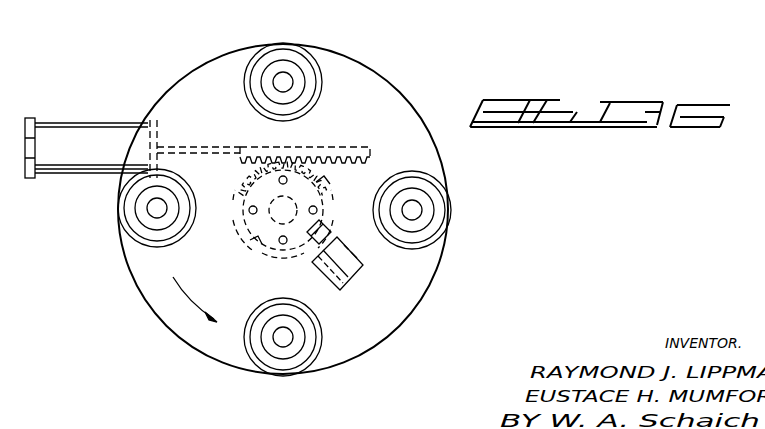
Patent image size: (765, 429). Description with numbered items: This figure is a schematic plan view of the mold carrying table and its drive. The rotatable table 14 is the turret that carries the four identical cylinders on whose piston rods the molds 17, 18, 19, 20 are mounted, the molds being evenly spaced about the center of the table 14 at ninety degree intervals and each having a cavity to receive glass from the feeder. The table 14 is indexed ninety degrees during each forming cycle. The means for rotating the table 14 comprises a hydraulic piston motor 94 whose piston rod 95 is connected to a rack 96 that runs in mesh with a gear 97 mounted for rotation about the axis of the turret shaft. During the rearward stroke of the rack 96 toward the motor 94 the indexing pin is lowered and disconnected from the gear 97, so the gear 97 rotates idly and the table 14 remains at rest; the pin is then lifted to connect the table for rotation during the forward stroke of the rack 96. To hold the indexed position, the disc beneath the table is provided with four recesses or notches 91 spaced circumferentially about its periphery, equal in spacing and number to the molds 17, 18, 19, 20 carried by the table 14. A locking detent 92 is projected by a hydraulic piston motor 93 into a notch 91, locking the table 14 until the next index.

The rotatable table 14 is at (382, 103).
The mold 17 is at (123, 218).
The mold 18 is at (278, 370).
The mold 19 is at (448, 210).
The mold 20 is at (312, 22).
The notch 91 is at (328, 182).
The locking detent 92 is at (323, 228).
The hydraulic piston motor 93 is at (352, 260).
The hydraulic piston motor 94 is at (68, 135).
The piston rod 95 is at (224, 130).
The rack 96 is at (348, 150).
The gear 97 is at (248, 183).